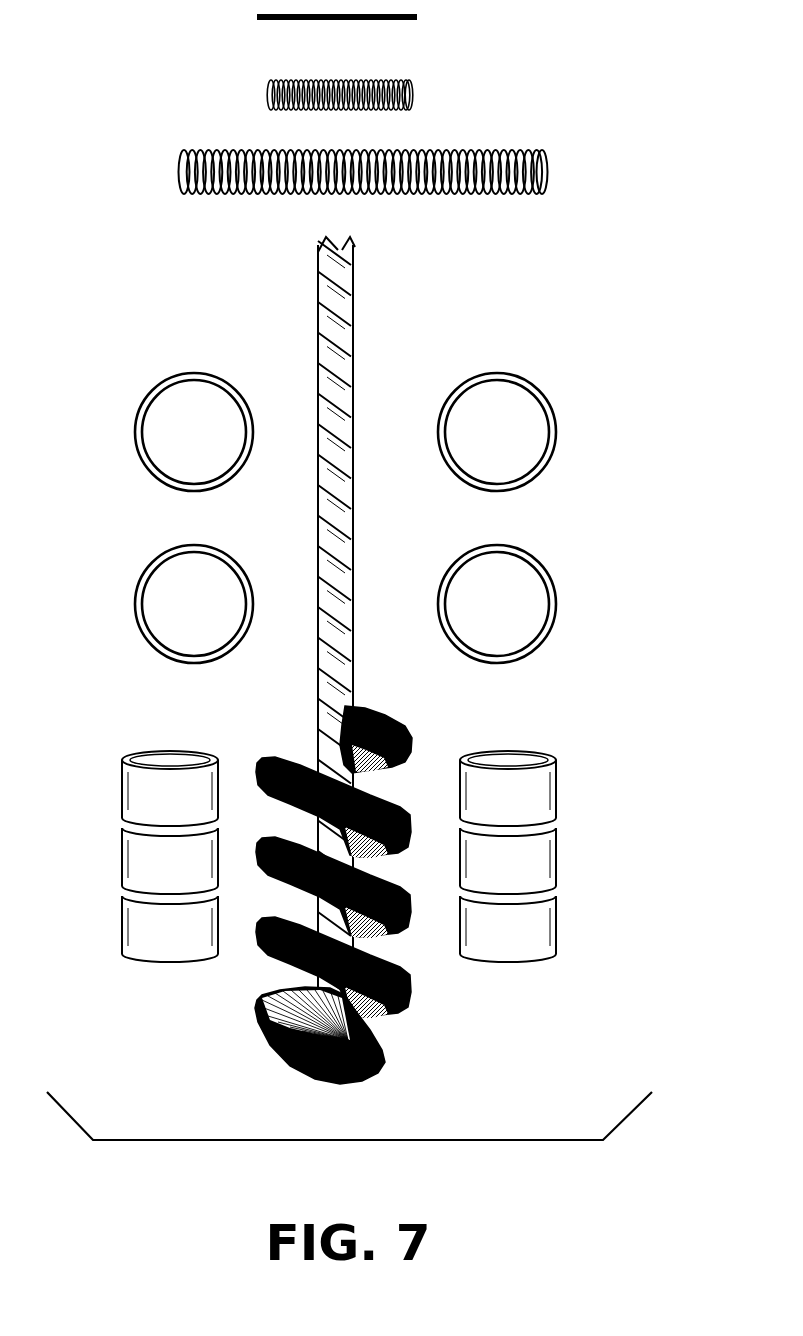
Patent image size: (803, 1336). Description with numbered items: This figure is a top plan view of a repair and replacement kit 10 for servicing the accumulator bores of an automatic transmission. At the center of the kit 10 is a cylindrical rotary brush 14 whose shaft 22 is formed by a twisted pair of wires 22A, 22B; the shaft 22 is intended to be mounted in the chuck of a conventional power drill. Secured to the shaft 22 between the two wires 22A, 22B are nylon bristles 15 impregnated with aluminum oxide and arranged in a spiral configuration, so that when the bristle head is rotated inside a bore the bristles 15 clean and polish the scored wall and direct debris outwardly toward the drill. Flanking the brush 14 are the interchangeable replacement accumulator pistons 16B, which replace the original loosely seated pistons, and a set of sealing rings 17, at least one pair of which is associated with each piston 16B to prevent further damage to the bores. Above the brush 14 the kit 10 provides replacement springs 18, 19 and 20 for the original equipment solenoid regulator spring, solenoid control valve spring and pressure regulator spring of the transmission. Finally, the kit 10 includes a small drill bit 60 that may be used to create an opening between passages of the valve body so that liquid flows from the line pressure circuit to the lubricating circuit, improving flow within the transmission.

The kit 10 is at (650, 276).
The cylindrical rotary brush 14 is at (335, 632).
The nylon bristles 15 is at (430, 742).
The replacement accumulator piston 16B is at (143, 752).
The sealing rings 17 is at (152, 391).
The replacement spring 18 is at (363, 203).
The replacement spring 19 is at (258, 206).
The replacement spring 20 is at (256, 97).
The shaft 22 is at (339, 632).
The twisted wire 22A is at (342, 312).
The twisted wire 22B is at (326, 333).
The drill bit 60 is at (408, 20).